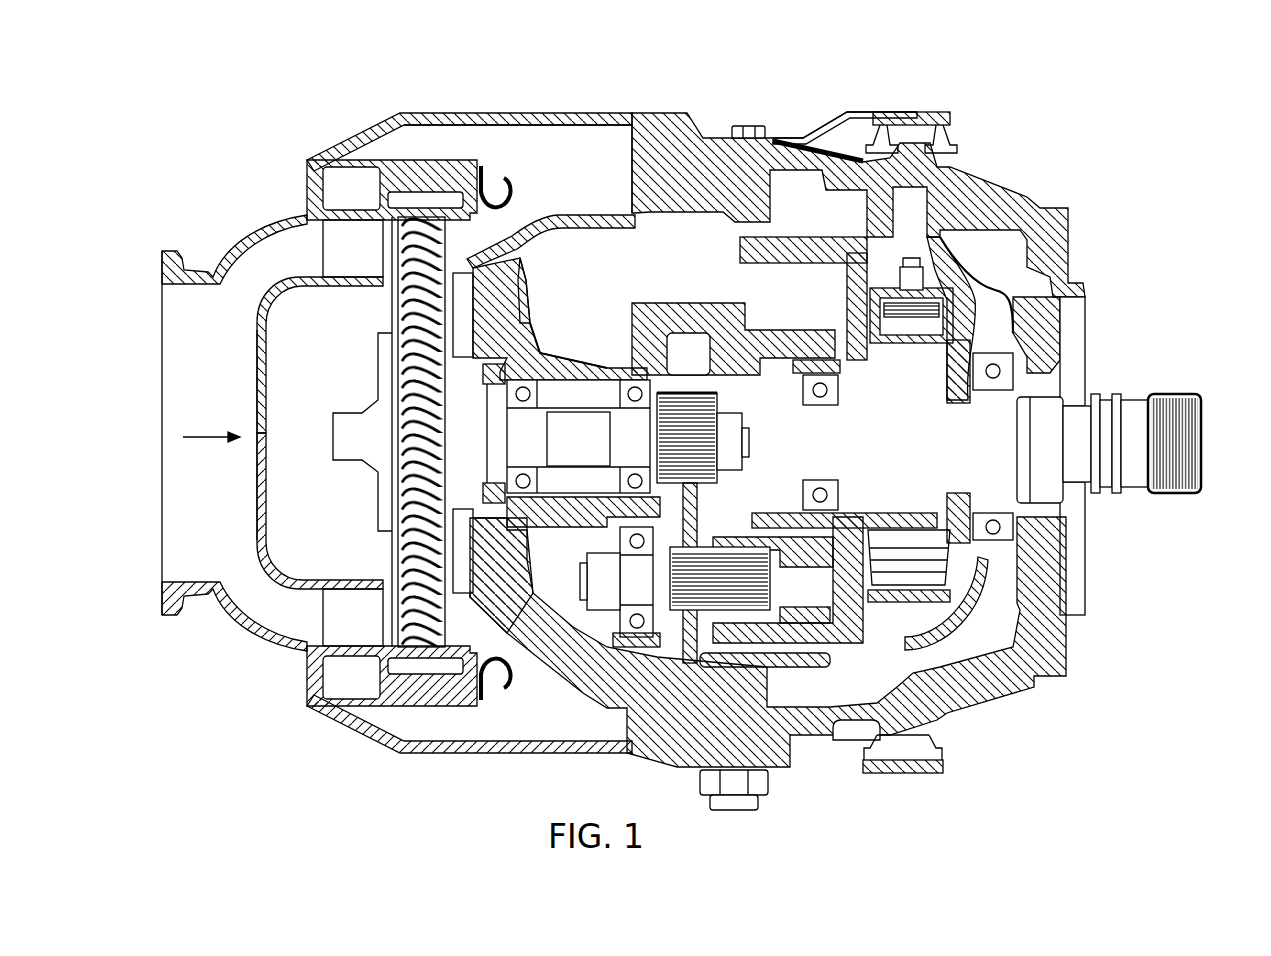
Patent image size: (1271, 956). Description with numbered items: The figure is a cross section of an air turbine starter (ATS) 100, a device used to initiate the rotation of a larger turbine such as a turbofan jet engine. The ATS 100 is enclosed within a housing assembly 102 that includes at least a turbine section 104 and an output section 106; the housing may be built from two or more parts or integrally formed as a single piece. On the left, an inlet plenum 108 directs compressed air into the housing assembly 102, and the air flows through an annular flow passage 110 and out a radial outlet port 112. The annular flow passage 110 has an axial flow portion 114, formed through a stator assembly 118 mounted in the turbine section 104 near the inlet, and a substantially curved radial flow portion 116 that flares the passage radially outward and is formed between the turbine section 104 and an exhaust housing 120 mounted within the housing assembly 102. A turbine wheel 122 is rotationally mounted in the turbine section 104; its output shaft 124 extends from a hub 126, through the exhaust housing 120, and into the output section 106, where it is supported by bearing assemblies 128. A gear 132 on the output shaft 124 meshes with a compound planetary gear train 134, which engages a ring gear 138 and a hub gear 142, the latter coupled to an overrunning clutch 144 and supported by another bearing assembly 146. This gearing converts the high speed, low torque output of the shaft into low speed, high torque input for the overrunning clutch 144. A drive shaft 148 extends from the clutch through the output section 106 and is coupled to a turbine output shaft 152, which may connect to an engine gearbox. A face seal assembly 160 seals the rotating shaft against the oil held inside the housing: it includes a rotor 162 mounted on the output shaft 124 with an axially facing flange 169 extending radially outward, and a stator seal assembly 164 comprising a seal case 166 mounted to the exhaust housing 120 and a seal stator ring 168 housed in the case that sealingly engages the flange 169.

The air turbine starter 100 is at (804, 112).
The housing assembly 102 is at (1000, 180).
The turbine section 104 is at (456, 106).
The output section 106 is at (1072, 254).
The inlet plenum 108 is at (155, 311).
The annular flow passage 110 is at (187, 371).
The radial outlet port 112 is at (551, 174).
The axial flow portion 114 is at (333, 257).
The radial flow portion 116 is at (481, 236).
The stator assembly 118 is at (256, 491).
The exhaust housing 120 is at (527, 312).
The turbine wheel 122 is at (366, 381).
The output shaft 124 is at (749, 445).
The hub 126 is at (372, 508).
The bearing assemblies 128 is at (578, 436).
The gear 132 is at (688, 393).
The compound planetary gear train 134 is at (742, 547).
The ring gear 138 is at (862, 643).
The hub gear 142 is at (875, 512).
The overrunning clutch 144 is at (886, 567).
The bearing assembly 146 is at (820, 408).
The drive shaft 148 is at (1030, 458).
The turbine output shaft 152 is at (1205, 423).
The face seal assembly 160 is at (437, 359).
The rotor 162 is at (536, 345).
The stator seal assembly 164 is at (560, 319).
The seal case 166 is at (501, 575).
The seal stator ring 168 is at (540, 530).
The axially facing flange 169 is at (484, 433).